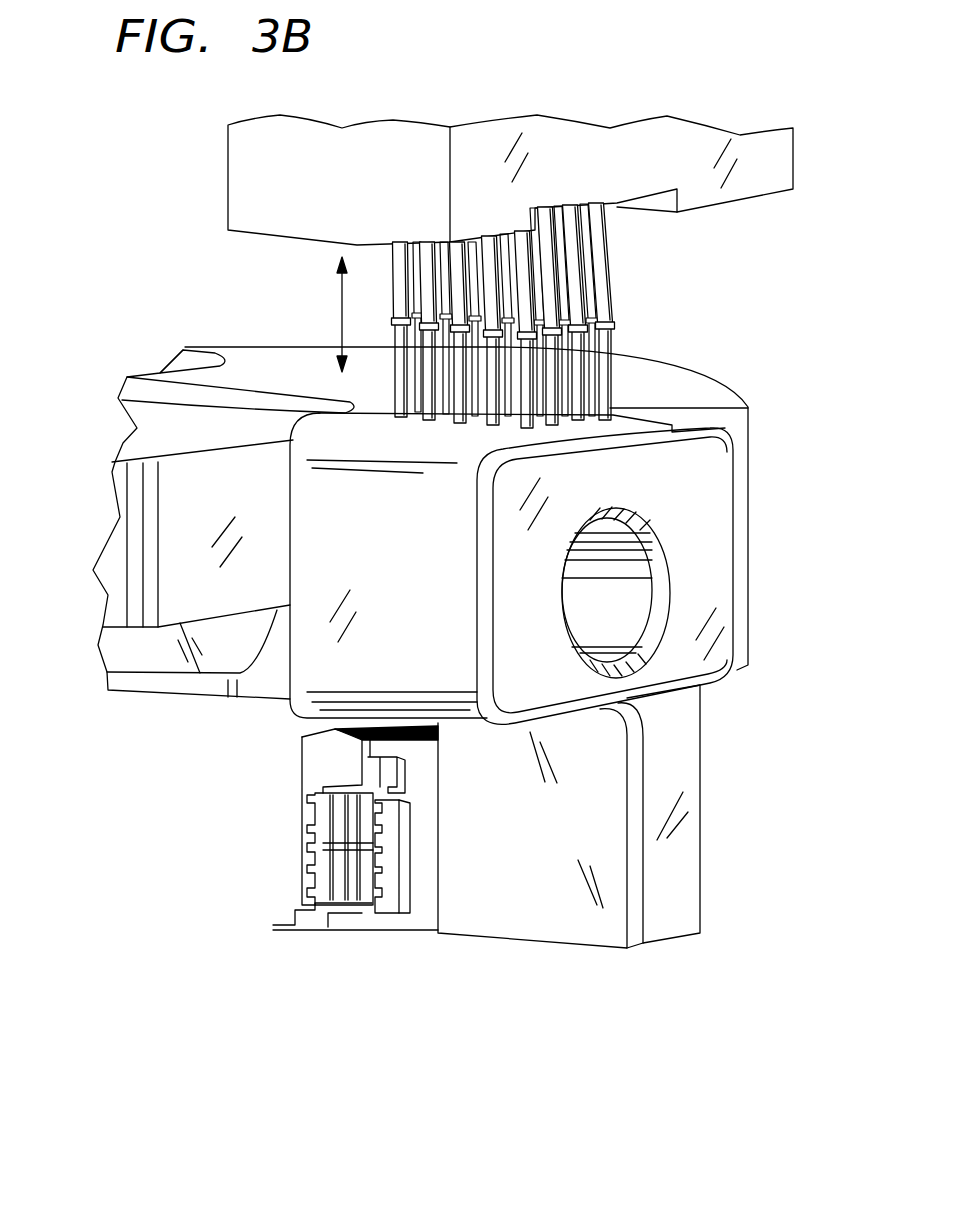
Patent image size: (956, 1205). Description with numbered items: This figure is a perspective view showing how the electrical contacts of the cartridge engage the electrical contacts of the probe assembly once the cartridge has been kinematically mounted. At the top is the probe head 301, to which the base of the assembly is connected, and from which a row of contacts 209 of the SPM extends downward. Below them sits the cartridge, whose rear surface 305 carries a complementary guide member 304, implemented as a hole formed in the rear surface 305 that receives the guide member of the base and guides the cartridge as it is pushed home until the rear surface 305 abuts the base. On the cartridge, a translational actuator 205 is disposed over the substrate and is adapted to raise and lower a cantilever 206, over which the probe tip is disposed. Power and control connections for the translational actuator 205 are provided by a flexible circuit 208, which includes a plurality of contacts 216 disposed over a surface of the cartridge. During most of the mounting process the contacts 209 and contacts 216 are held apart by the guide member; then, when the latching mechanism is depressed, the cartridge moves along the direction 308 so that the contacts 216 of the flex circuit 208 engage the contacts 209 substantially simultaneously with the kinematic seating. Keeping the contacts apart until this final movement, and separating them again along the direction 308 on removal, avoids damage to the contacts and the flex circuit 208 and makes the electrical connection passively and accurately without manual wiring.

The probe head 301 is at (708, 124).
The direction 308 is at (340, 304).
The contacts 209 is at (622, 320).
The contacts 216 is at (365, 442).
The rear surface 305 is at (688, 480).
The complementary guide member 304 is at (636, 588).
The flexible circuit 208 is at (557, 888).
The translational actuator 205 is at (308, 820).
The cantilever 206 is at (268, 927).